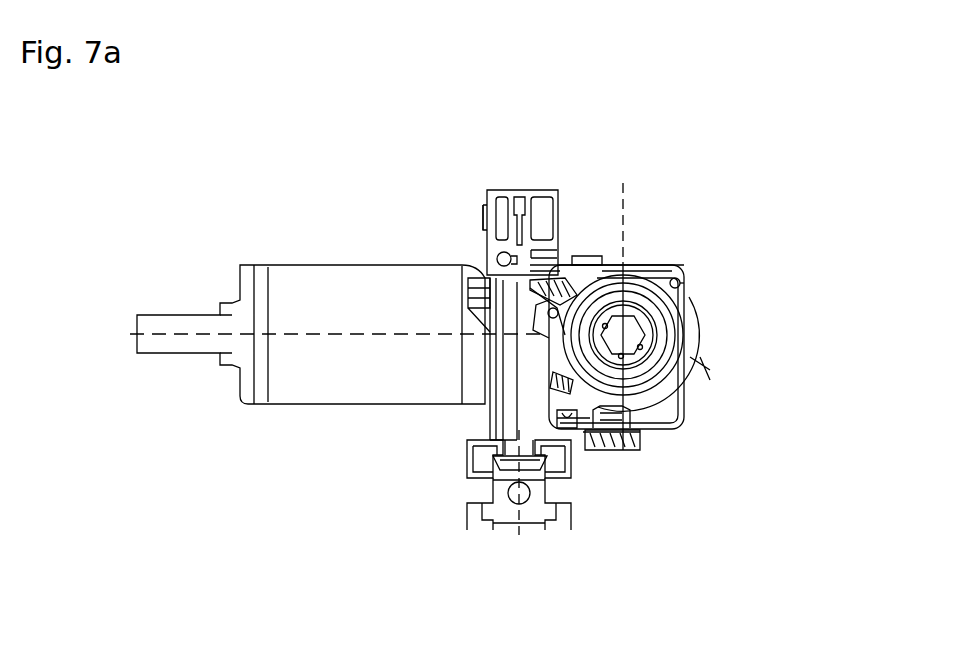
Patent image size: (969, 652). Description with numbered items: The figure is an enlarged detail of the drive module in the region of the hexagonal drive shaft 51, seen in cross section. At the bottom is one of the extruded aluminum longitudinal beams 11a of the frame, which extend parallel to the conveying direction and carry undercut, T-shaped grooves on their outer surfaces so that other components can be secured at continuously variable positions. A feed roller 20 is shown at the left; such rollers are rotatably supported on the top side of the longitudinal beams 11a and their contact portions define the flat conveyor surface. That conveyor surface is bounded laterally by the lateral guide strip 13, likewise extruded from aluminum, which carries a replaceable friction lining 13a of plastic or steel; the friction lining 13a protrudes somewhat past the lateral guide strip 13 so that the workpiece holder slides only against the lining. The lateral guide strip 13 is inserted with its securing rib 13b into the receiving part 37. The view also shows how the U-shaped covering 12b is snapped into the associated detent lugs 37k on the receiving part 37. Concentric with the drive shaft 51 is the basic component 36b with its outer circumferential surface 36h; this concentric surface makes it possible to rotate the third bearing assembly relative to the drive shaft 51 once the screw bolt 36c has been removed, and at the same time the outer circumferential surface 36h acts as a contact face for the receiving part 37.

The feed roller 20 is at (308, 292).
The securing rib 13b is at (470, 300).
The friction lining 13a is at (485, 208).
The lateral guide strip 13 is at (540, 205).
The detent lug 37k is at (573, 258).
The screw bolt 36c is at (610, 262).
The hexagonal drive shaft 51 is at (640, 327).
The U-shaped covering 12b is at (685, 410).
The basic component 36b is at (675, 432).
The outer circumferential surface 36h is at (607, 440).
The receiving part 37 is at (520, 403).
The longitudinal beam 11a is at (503, 510).